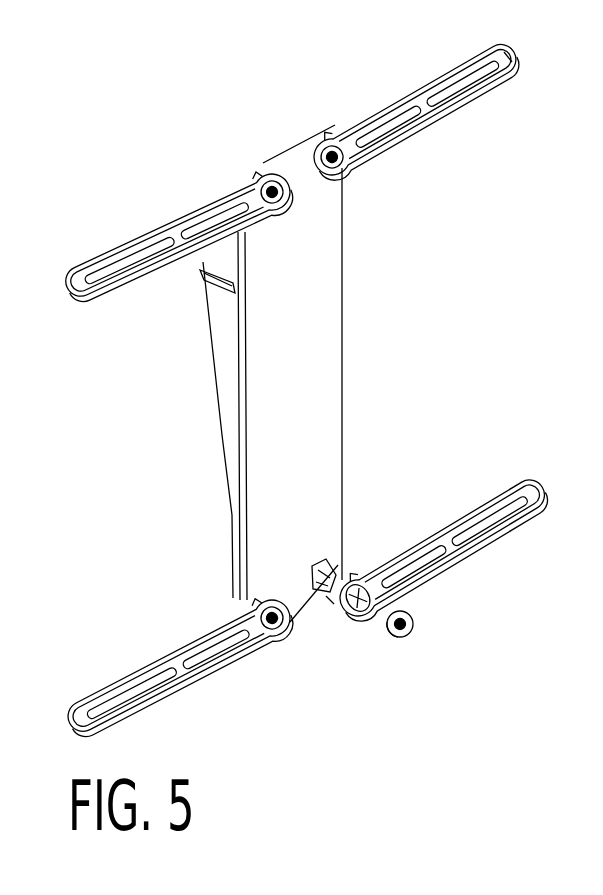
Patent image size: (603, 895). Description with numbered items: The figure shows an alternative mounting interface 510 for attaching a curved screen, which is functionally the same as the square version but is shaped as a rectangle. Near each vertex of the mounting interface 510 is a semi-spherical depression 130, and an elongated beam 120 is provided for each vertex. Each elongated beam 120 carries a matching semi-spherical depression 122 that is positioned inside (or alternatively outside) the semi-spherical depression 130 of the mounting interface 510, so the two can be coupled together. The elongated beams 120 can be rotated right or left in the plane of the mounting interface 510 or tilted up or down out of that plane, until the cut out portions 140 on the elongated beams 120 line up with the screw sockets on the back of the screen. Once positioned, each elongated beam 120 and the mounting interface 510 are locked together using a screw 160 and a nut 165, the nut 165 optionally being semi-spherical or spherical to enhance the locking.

The elongated beam 120 is at (190, 213).
The semi-spherical depression 122 is at (422, 540).
The semi-spherical depression 130 is at (330, 599).
The cut out portion 140 is at (512, 64).
The screw 160 is at (322, 532).
The nut 165 is at (406, 637).
The mounting interface 510 is at (266, 362).